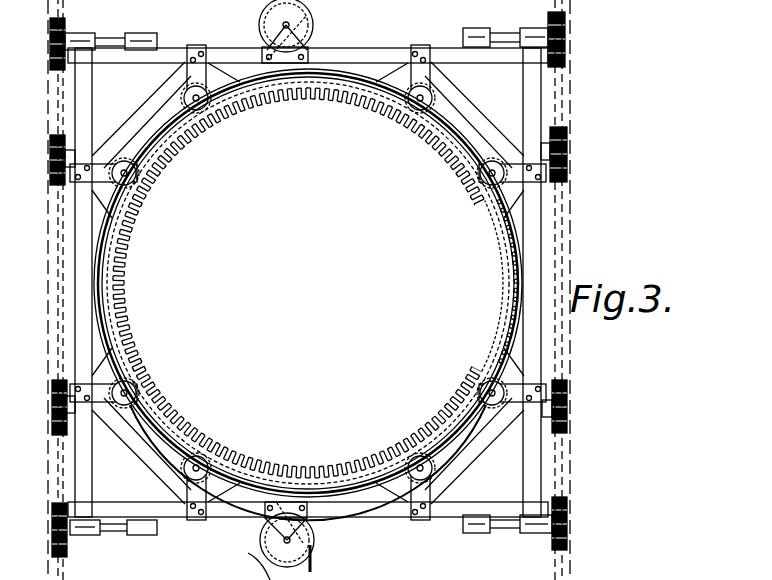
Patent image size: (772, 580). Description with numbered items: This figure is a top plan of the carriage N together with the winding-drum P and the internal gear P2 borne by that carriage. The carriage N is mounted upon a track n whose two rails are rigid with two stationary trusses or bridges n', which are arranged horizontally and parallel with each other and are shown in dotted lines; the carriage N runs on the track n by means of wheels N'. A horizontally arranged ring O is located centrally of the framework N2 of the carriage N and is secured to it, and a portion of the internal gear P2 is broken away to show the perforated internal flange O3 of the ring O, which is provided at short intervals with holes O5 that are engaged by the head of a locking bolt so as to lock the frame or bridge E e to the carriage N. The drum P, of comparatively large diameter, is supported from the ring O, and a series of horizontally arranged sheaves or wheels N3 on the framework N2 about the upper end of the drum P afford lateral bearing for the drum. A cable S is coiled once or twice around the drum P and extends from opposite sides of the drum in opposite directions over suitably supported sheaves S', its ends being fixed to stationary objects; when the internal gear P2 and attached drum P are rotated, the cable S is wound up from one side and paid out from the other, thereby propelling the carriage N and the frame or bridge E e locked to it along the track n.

The carriage N is at (299, 314).
The wheels N' is at (309, 284).
The framework N2 is at (308, 321).
The sheaves or wheels N3 is at (134, 183).
The ring O is at (507, 210).
The internal annular flange O3 is at (512, 251).
The holes O5 is at (513, 295).
The winding-drum P is at (117, 328).
The internal gear P2 is at (333, 459).
The cable S is at (292, 276).
The sheaves S' is at (286, 290).
The pulley shaft s is at (312, 560).
The frame or bridge E is at (223, 571).
The frame or bridge e is at (354, 571).
The track n is at (301, 290).
The trusses or bridges n' is at (300, 290).